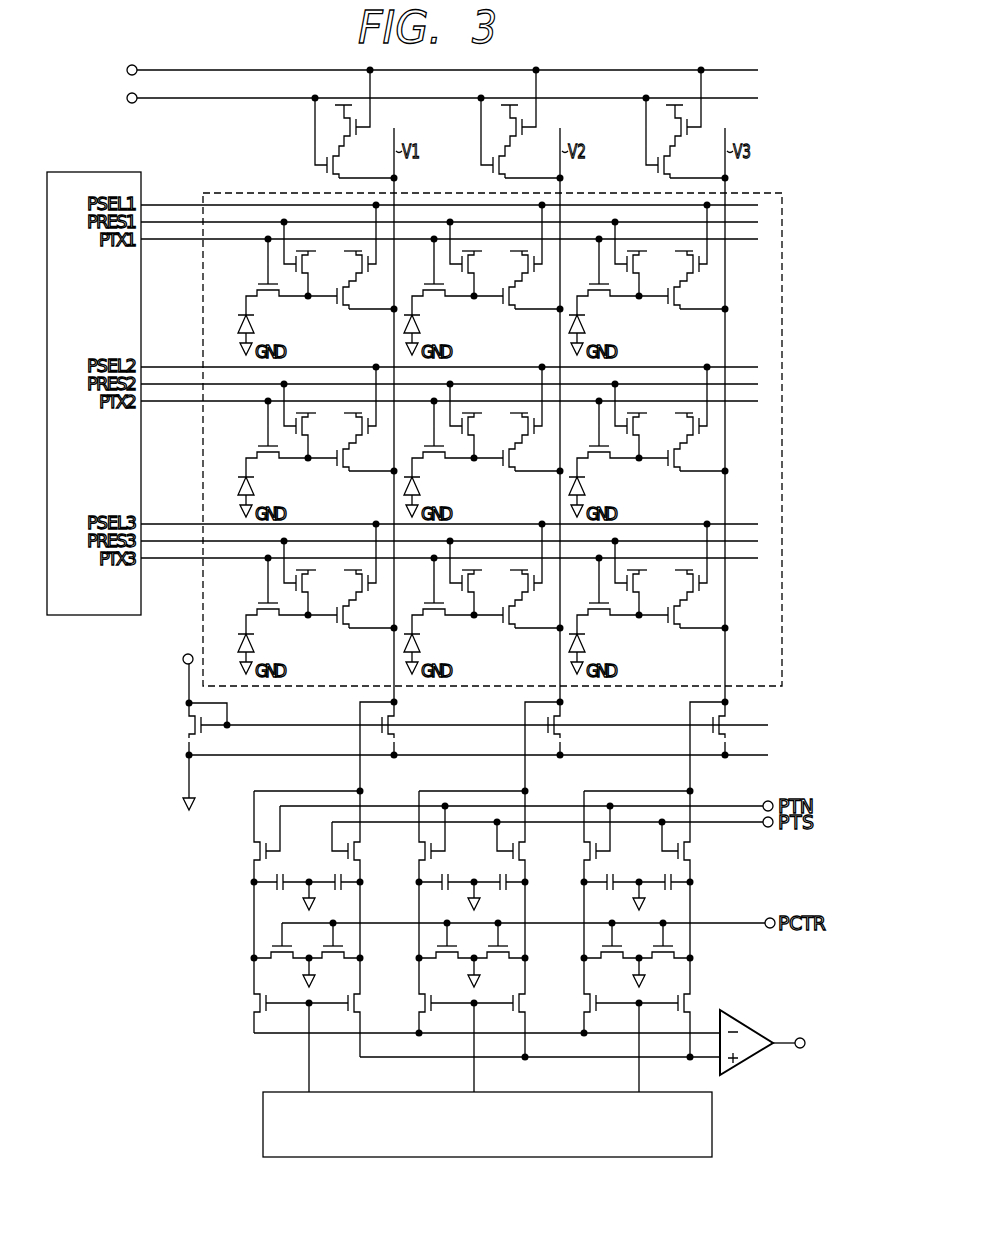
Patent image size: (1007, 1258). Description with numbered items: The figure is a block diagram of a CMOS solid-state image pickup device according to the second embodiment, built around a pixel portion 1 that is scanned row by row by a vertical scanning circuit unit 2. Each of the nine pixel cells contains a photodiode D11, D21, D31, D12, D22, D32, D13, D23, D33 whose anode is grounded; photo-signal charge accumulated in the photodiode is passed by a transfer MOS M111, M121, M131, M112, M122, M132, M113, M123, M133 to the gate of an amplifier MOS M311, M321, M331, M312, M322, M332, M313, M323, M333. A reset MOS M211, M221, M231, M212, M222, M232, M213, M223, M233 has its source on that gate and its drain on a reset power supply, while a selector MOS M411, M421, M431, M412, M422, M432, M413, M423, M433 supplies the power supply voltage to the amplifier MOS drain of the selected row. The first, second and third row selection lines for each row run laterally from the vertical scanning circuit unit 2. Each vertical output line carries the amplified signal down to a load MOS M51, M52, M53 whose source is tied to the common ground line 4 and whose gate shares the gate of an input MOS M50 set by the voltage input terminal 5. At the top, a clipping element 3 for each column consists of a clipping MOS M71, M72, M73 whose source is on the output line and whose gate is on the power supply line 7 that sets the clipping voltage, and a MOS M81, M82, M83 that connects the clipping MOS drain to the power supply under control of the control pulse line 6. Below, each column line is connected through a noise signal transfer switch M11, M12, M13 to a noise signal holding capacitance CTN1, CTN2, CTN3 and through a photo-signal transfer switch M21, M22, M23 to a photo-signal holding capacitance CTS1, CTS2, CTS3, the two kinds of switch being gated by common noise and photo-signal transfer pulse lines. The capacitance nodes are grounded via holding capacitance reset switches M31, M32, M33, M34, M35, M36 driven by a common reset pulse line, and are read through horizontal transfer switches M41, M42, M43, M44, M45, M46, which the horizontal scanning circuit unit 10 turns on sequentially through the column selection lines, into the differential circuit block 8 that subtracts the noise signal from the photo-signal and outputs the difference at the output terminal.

The pixel portion 1 is at (229, 193).
The vertical scanning circuit unit 2 is at (70, 173).
The clipping element 3 is at (500, 127).
The GND line 4 is at (187, 776).
The voltage input terminal 5 is at (188, 654).
The control pulse line 6 is at (126, 72).
The power supply line 7 is at (126, 100).
The differential circuit block 8 is at (746, 1015).
The horizontal scanning circuit unit 10 is at (712, 1137).
The transfer MOS M111 is at (277, 301).
The transfer MOS M121 is at (443, 301).
The transfer MOS M131 is at (608, 301).
The transfer MOS M112 is at (277, 463).
The transfer MOS M122 is at (443, 463).
The transfer MOS M132 is at (608, 463).
The transfer MOS M113 is at (277, 620).
The transfer MOS M123 is at (443, 620).
The transfer MOS M133 is at (608, 620).
The reset MOS M211 is at (323, 267).
The reset MOS M221 is at (489, 267).
The reset MOS M231 is at (654, 267).
The reset MOS M212 is at (323, 429).
The reset MOS M222 is at (489, 429).
The reset MOS M232 is at (654, 429).
The reset MOS M213 is at (323, 586).
The reset MOS M223 is at (489, 586).
The reset MOS M233 is at (654, 586).
The amplifier MOS M311 is at (340, 310).
The amplifier MOS M321 is at (506, 310).
The amplifier MOS M331 is at (671, 310).
The amplifier MOS M312 is at (340, 472).
The amplifier MOS M322 is at (506, 472).
The amplifier MOS M332 is at (671, 472).
The amplifier MOS M313 is at (340, 629).
The amplifier MOS M323 is at (506, 629).
The amplifier MOS M333 is at (671, 629).
The selector MOS M411 is at (368, 278).
The selector MOS M421 is at (534, 278).
The selector MOS M431 is at (699, 278).
The selector MOS M412 is at (368, 440).
The selector MOS M422 is at (534, 440).
The selector MOS M432 is at (699, 440).
The selector MOS M413 is at (368, 597).
The selector MOS M423 is at (534, 597).
The selector MOS M433 is at (699, 597).
The photodiode D11 is at (262, 328).
The photodiode D21 is at (428, 328).
The photodiode D31 is at (593, 328).
The photodiode D12 is at (262, 490).
The photodiode D22 is at (428, 490).
The photodiode D32 is at (593, 490).
The photodiode D13 is at (262, 647).
The photodiode D23 is at (428, 647).
The photodiode D33 is at (593, 647).
The clipping MOS M71 is at (313, 169).
The clipping MOS M72 is at (479, 169).
The clipping MOS M73 is at (644, 169).
The MOS for activating clipping operation M81 is at (361, 140).
The MOS for activating clipping operation M82 is at (527, 140).
The MOS for activating clipping operation M83 is at (692, 140).
The input MOS M50 is at (188, 728).
The load MOS M51 is at (408, 731).
The load MOS M52 is at (574, 731).
The load MOS M53 is at (739, 731).
The noise signal transfer switch M11 is at (282, 855).
The noise signal transfer switch M12 is at (447, 855).
The noise signal transfer switch M13 is at (612, 855).
The photo-signal transfer switch M21 is at (373, 851).
The photo-signal transfer switch M22 is at (538, 851).
The photo-signal transfer switch M23 is at (703, 851).
The noise signal holding capacitance CTN1 is at (281, 896).
The noise signal holding capacitance CTN2 is at (446, 896).
The noise signal holding capacitance CTN3 is at (611, 896).
The photo-signal holding capacitance CTS1 is at (338, 896).
The photo-signal holding capacitance CTS2 is at (503, 896).
The photo-signal holding capacitance CTS3 is at (668, 896).
The holding capacitance reset switch M31 is at (282, 966).
The holding capacitance reset switch M32 is at (334, 966).
The holding capacitance reset switch M33 is at (447, 966).
The holding capacitance reset switch M34 is at (499, 966).
The holding capacitance reset switch M35 is at (612, 966).
The holding capacitance reset switch M36 is at (664, 966).
The horizontal transfer switch M41 is at (278, 1011).
The horizontal transfer switch M42 is at (337, 1011).
The horizontal transfer switch M43 is at (443, 1011).
The horizontal transfer switch M44 is at (502, 1011).
The horizontal transfer switch M45 is at (608, 1011).
The horizontal transfer switch M46 is at (667, 1011).